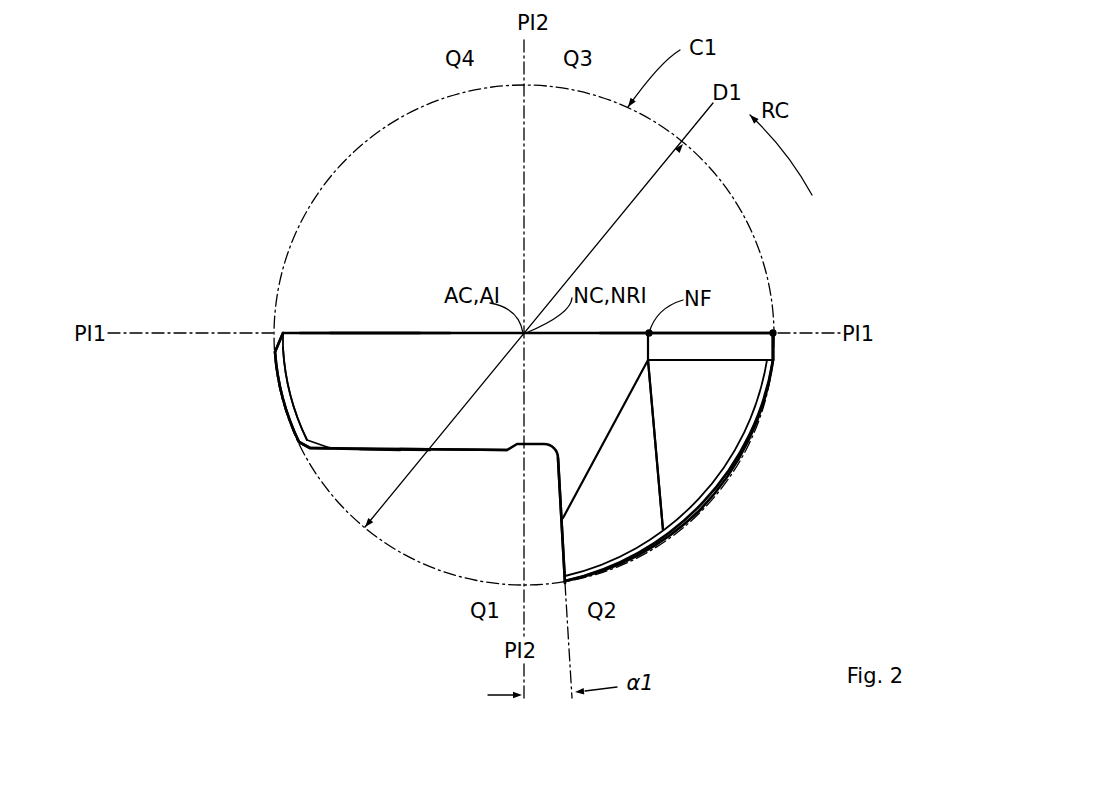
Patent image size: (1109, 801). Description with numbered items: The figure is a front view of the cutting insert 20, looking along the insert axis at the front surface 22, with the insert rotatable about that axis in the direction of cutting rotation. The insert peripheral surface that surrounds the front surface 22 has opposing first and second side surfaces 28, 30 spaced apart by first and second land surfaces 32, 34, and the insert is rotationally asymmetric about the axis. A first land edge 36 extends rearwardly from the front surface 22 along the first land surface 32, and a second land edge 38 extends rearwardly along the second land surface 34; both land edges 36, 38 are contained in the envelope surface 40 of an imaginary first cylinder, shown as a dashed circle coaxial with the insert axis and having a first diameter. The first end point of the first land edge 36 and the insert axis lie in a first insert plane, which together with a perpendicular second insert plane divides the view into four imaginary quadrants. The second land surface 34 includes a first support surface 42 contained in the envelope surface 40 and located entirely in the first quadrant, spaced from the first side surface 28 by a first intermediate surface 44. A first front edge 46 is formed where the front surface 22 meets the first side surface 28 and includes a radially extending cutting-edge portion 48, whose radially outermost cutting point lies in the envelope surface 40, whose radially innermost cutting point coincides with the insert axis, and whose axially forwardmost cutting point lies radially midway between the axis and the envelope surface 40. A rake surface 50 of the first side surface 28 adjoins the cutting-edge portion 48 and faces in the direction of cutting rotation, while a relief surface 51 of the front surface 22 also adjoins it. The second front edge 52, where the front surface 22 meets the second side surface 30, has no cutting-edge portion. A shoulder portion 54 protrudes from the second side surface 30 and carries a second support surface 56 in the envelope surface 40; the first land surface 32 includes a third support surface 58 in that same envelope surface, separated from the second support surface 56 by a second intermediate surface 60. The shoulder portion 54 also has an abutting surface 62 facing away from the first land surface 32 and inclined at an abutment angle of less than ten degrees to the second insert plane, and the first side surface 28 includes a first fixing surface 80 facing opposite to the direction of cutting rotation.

The cutting insert 20 is at (677, 455).
The front surface 22 is at (572, 383).
The first side surface 28 is at (388, 333).
The second side surface 30 is at (440, 452).
The first land surface 32 is at (788, 343).
The second land surface 34 is at (270, 378).
The first land edge 36 is at (773, 333).
The second land edge 38 is at (293, 442).
The envelope surface 40 is at (597, 95).
The first support surface 42 is at (280, 400).
The first intermediate surface 44 is at (278, 351).
The first front edge 46 is at (338, 450).
The cutting-edge portion 48 is at (640, 333).
The rake surface 50 is at (707, 333).
The relief surface 51 is at (718, 356).
The second front edge 52 is at (395, 452).
The shoulder portion 54 is at (650, 528).
The second support surface 56 is at (653, 547).
The third support surface 58 is at (777, 352).
The second intermediate surface 60 is at (750, 435).
The abutting surface 62 is at (563, 542).
The first fixing surface 80 is at (360, 333).